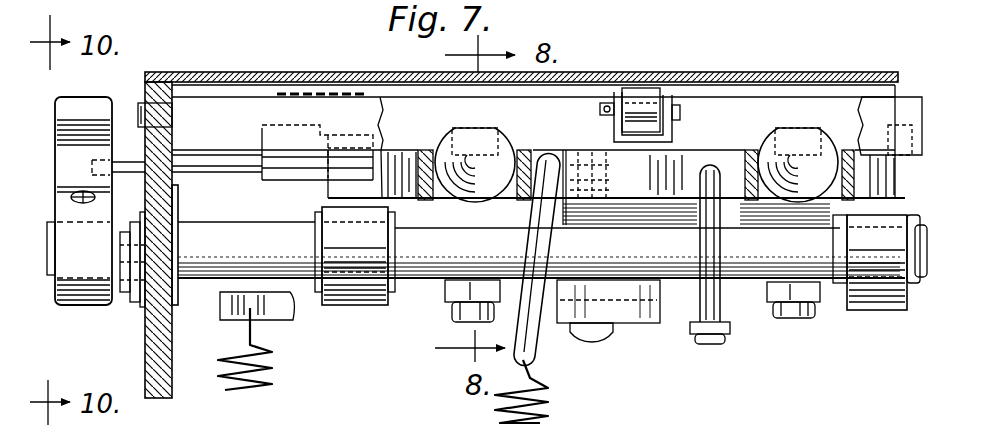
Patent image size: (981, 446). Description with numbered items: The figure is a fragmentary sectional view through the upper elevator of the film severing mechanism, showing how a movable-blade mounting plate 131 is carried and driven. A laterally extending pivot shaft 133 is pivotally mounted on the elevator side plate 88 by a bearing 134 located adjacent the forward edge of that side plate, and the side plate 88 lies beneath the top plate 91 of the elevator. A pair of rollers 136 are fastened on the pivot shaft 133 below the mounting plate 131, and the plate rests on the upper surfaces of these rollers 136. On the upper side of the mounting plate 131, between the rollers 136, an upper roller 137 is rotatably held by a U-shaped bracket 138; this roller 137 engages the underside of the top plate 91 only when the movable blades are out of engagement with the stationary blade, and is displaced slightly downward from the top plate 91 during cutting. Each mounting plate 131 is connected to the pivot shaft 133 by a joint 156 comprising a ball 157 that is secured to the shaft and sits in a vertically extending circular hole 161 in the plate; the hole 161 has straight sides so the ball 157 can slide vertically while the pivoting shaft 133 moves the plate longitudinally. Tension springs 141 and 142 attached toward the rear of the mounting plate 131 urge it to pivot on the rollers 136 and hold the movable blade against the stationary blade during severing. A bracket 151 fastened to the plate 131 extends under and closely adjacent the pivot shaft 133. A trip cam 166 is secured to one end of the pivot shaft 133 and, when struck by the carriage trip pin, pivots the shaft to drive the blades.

The top plate 91 is at (838, 78).
The side plate 88 is at (158, 392).
The trip cam 166 is at (75, 310).
The bearing 134 is at (137, 313).
The joint 156 is at (418, 110).
The ball 157 is at (507, 143).
The circular hole 161 is at (437, 163).
The pivot shaft 133 is at (233, 232).
The roller 136 is at (363, 306).
The mounting plate 131 is at (568, 150).
The tension spring 141 is at (545, 412).
The tension spring 142 is at (255, 385).
The bracket 151 is at (645, 326).
The upper roller 137 is at (652, 97).
The U-shaped bracket 138 is at (660, 138).